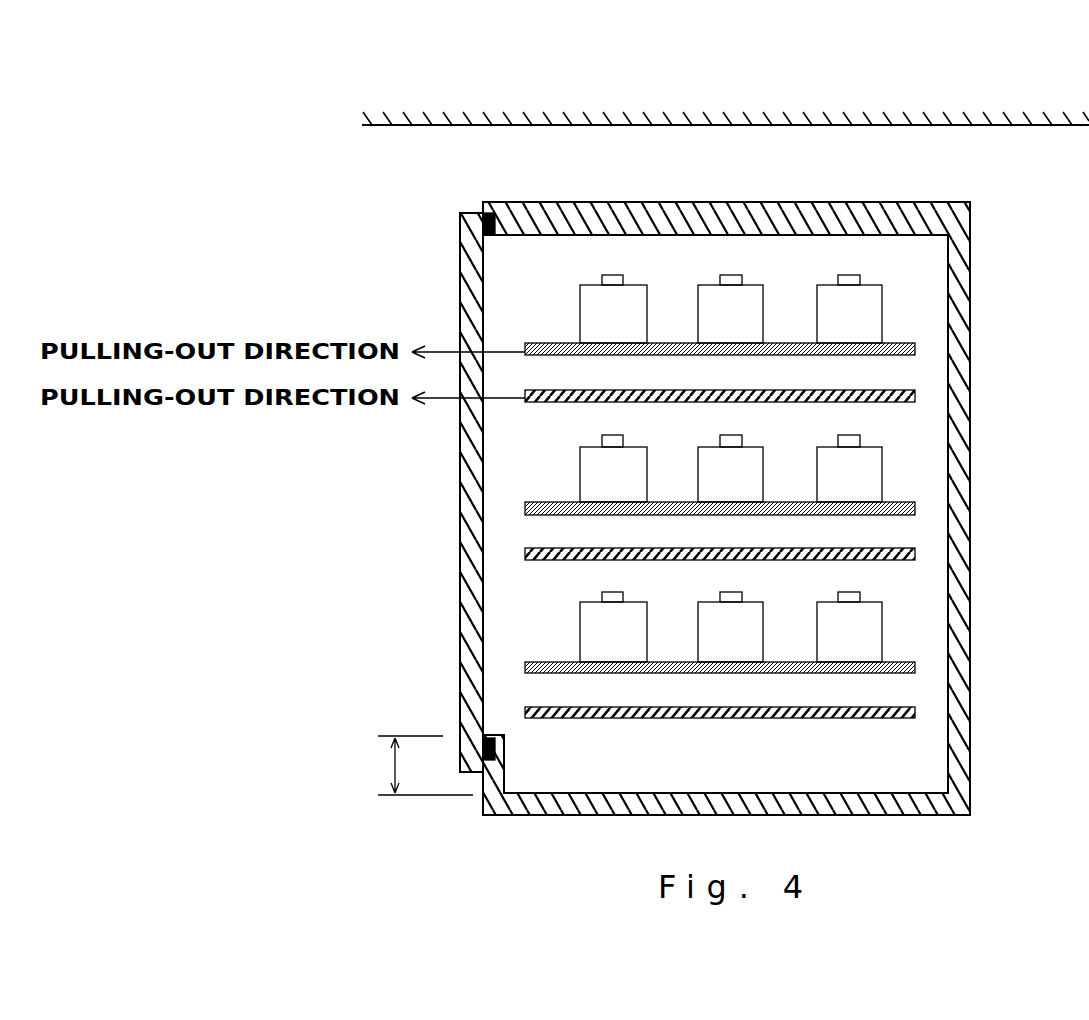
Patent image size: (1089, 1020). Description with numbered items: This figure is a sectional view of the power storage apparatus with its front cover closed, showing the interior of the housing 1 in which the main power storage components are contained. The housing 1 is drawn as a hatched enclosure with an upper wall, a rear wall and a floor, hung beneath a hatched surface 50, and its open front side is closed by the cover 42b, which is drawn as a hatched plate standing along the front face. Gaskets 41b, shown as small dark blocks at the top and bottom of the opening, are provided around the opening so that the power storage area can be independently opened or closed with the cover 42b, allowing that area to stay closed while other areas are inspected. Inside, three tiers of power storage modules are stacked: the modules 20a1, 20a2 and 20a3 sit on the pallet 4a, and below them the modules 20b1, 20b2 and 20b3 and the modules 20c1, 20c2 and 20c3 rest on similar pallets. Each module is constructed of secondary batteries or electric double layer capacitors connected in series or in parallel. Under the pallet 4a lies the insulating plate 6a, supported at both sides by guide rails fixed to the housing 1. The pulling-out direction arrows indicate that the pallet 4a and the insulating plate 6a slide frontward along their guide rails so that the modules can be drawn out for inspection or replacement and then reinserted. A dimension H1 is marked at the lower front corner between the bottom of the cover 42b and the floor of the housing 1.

The ceiling / mounting surface 50 is at (882, 110).
The housing 1 is at (752, 202).
The cover 42b is at (460, 252).
The gasket 41b is at (486, 215).
The pallet 4a is at (915, 347).
The insulating plate 6a is at (915, 397).
The power storage module 20a1 is at (641, 283).
The power storage module 20a2 is at (758, 283).
The power storage module 20a3 is at (877, 283).
The power storage module 20b1 is at (633, 447).
The power storage module 20b2 is at (750, 447).
The power storage module 20b3 is at (869, 447).
The power storage module 20c1 is at (633, 602).
The power storage module 20c2 is at (750, 602).
The power storage module 20c3 is at (869, 602).
The height dimension H1 is at (420, 765).